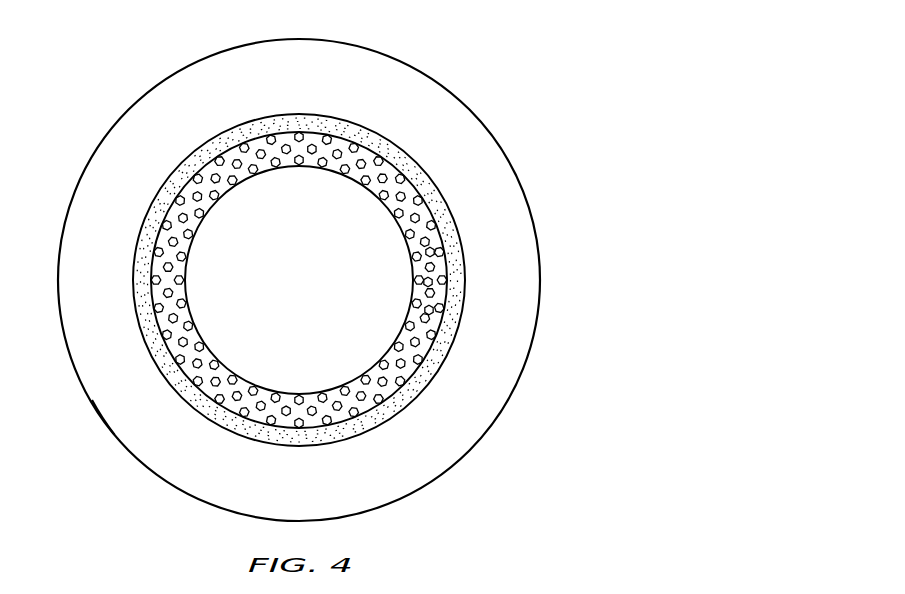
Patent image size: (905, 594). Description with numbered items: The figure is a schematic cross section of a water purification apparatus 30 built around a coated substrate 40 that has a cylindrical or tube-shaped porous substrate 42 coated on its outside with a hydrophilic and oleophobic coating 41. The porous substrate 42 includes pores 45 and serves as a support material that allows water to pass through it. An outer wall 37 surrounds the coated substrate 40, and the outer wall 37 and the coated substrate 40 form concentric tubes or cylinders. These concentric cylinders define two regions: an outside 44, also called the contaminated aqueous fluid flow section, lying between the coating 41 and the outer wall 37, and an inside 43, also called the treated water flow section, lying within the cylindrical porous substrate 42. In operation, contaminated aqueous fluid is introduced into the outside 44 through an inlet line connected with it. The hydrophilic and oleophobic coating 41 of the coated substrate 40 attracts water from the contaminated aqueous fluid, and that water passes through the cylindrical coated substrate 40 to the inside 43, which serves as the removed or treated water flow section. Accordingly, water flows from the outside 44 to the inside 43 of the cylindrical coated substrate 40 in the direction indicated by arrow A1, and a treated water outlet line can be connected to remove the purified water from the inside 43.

The water purification apparatus 30 is at (461, 69).
The outer wall 37 is at (115, 435).
The coated substrate 40 is at (150, 202).
The hydrophilic and oleophobic coating 41 is at (408, 402).
The porous substrate 42 is at (407, 202).
The inside 43 is at (299, 280).
The outside 44 is at (223, 93).
The pores 45 is at (429, 310).
The arrow A1 is at (233, 280).